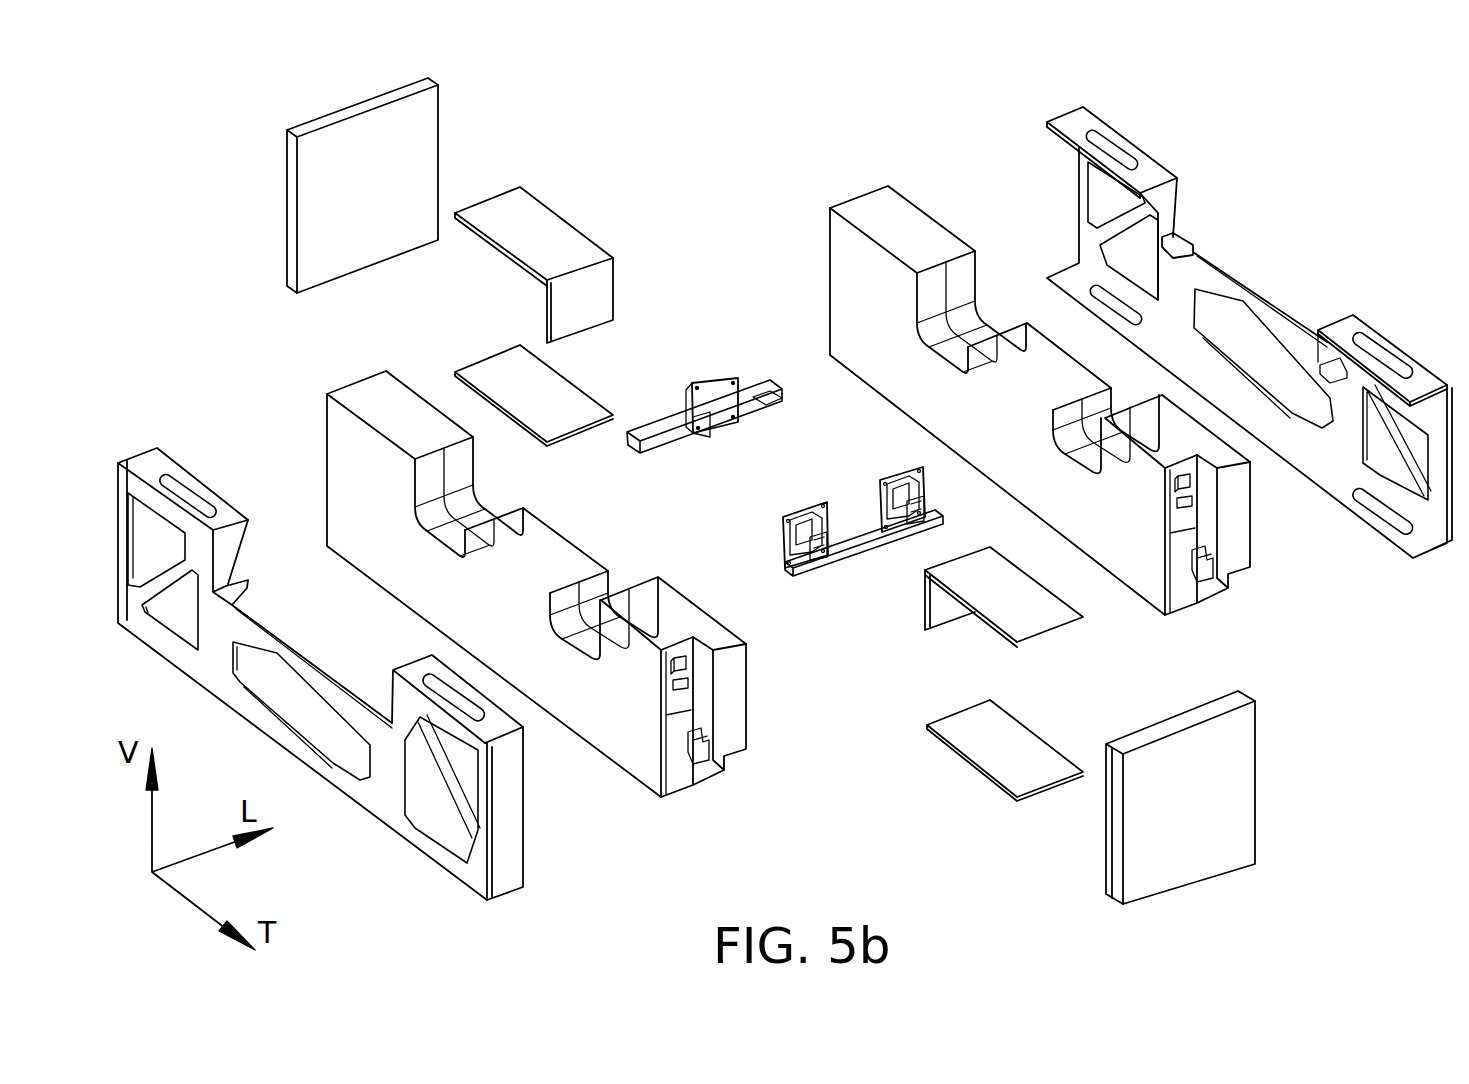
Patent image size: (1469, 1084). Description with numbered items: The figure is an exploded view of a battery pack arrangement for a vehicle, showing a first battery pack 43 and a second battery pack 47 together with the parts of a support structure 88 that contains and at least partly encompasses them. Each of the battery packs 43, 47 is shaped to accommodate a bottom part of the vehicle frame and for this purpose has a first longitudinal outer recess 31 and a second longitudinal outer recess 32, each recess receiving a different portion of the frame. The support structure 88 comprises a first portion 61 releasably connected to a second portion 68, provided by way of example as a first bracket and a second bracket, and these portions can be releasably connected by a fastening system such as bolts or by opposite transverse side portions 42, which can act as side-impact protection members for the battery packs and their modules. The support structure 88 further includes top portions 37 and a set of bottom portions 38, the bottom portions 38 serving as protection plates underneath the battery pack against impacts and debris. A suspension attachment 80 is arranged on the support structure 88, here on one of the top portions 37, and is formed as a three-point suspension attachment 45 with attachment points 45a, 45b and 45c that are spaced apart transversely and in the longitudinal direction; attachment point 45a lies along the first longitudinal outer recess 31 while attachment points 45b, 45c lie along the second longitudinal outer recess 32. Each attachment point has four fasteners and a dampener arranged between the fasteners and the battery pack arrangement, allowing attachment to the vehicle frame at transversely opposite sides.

The first longitudinal outer recess 31 is at (485, 502).
The second longitudinal outer recess 32 is at (590, 603).
The top portion 37 is at (544, 241).
The bottom portion 38 is at (523, 387).
The transverse side portion 42 is at (372, 157).
The first battery pack 43 is at (364, 487).
The three-point suspension attachment 45 is at (785, 419).
The attachment point 45a is at (710, 380).
The attachment point 45b is at (800, 507).
The attachment point 45c is at (883, 474).
The second battery pack 47 is at (840, 322).
The first portion 61 is at (147, 462).
The second portion 68 is at (1072, 118).
The suspension attachment 80 is at (785, 419).
The support structure 88 is at (785, 472).